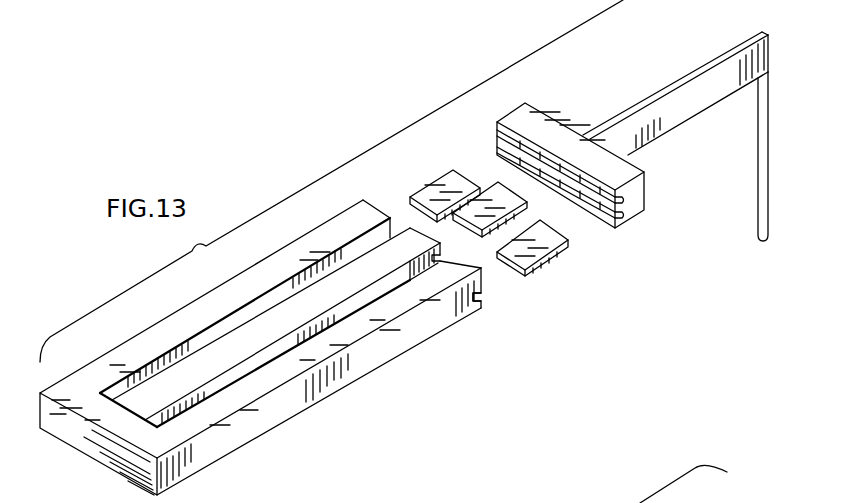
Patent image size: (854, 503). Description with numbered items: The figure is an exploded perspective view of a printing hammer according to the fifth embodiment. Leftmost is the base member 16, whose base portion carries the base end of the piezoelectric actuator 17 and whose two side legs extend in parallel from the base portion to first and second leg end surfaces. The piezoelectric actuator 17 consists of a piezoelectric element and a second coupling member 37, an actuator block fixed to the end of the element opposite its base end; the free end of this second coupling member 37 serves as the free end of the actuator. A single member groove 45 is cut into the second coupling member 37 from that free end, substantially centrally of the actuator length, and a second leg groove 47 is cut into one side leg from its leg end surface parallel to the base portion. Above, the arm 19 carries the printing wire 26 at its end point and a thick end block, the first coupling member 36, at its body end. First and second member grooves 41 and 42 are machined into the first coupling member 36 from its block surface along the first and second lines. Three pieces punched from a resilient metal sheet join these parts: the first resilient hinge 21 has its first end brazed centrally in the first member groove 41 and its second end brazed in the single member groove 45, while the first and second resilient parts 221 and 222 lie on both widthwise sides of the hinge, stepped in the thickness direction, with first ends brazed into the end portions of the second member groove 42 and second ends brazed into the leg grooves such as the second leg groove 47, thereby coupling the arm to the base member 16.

The base member 16 is at (277, 419).
The piezoelectric actuator 17 is at (236, 365).
The second coupling member 37 is at (408, 246).
The single member groove 45 is at (437, 258).
The second leg groove 47 is at (483, 297).
The first coupling member 36 is at (628, 222).
The first member groove 41 is at (499, 133).
The second member groove 42 is at (499, 150).
The arm 19 is at (676, 101).
The printing wire 26 is at (757, 147).
The first resilient part 221 is at (440, 183).
The first resilient hinge 21 is at (527, 198).
The second resilient part 222 is at (553, 250).